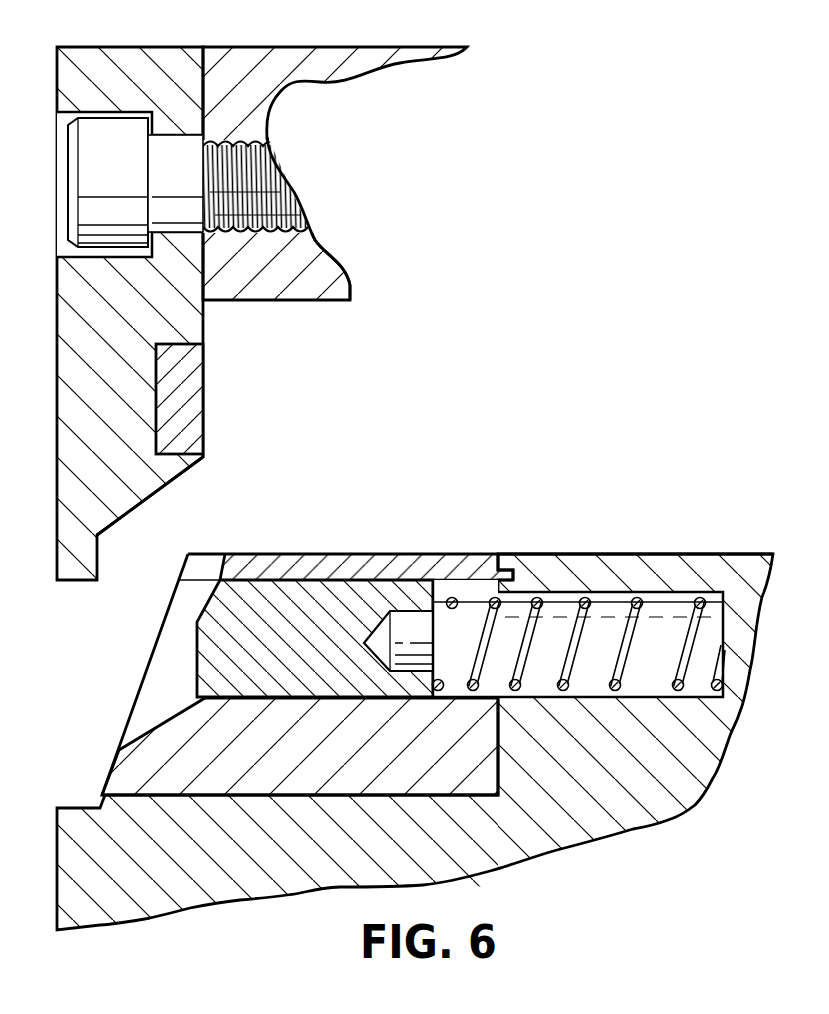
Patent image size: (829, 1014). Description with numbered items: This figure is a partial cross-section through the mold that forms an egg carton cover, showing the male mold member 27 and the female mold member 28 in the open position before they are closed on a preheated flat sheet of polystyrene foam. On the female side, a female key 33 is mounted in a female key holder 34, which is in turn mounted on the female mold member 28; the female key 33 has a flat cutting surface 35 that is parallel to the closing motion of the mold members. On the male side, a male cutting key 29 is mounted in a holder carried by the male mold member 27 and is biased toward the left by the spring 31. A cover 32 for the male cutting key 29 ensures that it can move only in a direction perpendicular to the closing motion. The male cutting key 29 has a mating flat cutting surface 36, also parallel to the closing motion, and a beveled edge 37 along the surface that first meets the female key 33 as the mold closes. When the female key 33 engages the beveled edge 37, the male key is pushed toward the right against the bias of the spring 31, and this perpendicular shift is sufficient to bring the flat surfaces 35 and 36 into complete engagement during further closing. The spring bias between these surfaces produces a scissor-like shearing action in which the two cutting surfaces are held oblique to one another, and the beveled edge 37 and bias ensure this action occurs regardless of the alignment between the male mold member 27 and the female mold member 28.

The male mold member 27 is at (62, 865).
The female mold member 28 is at (300, 47).
The male cutting key 29 is at (328, 590).
The spring 31 is at (592, 620).
The cover 32 is at (438, 573).
The female key 33 is at (190, 382).
The female key holder 34 is at (68, 425).
The flat cutting surface 35 is at (205, 425).
The mating flat cutting surface 36 is at (200, 672).
The beveled edge 37 is at (202, 608).